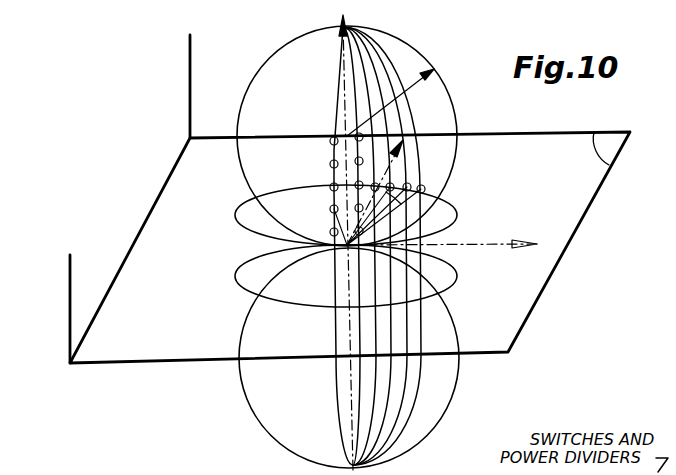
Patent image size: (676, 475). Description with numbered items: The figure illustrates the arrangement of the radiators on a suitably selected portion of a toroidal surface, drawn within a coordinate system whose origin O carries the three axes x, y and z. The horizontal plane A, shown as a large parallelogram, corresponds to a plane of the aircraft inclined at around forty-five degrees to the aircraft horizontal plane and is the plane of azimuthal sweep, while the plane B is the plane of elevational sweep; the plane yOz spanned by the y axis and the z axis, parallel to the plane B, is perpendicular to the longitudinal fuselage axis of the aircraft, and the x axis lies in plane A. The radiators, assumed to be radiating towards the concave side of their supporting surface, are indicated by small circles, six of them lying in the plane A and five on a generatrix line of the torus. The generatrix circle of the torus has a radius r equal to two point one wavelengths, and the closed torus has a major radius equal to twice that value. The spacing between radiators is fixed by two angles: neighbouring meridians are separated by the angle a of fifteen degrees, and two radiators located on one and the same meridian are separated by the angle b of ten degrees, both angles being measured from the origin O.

The horizontal plane A is at (350, 247).
The plane of elevational sweep B is at (72, 290).
The angle between neighbouring meridians a is at (425, 190).
The angle between radiators on a meridian b is at (336, 214).
The origin O is at (377, 232).
The x axis x is at (442, 234).
The y axis y is at (388, 178).
The z axis z is at (360, 240).
The radius of the generatrix circle r is at (422, 93).